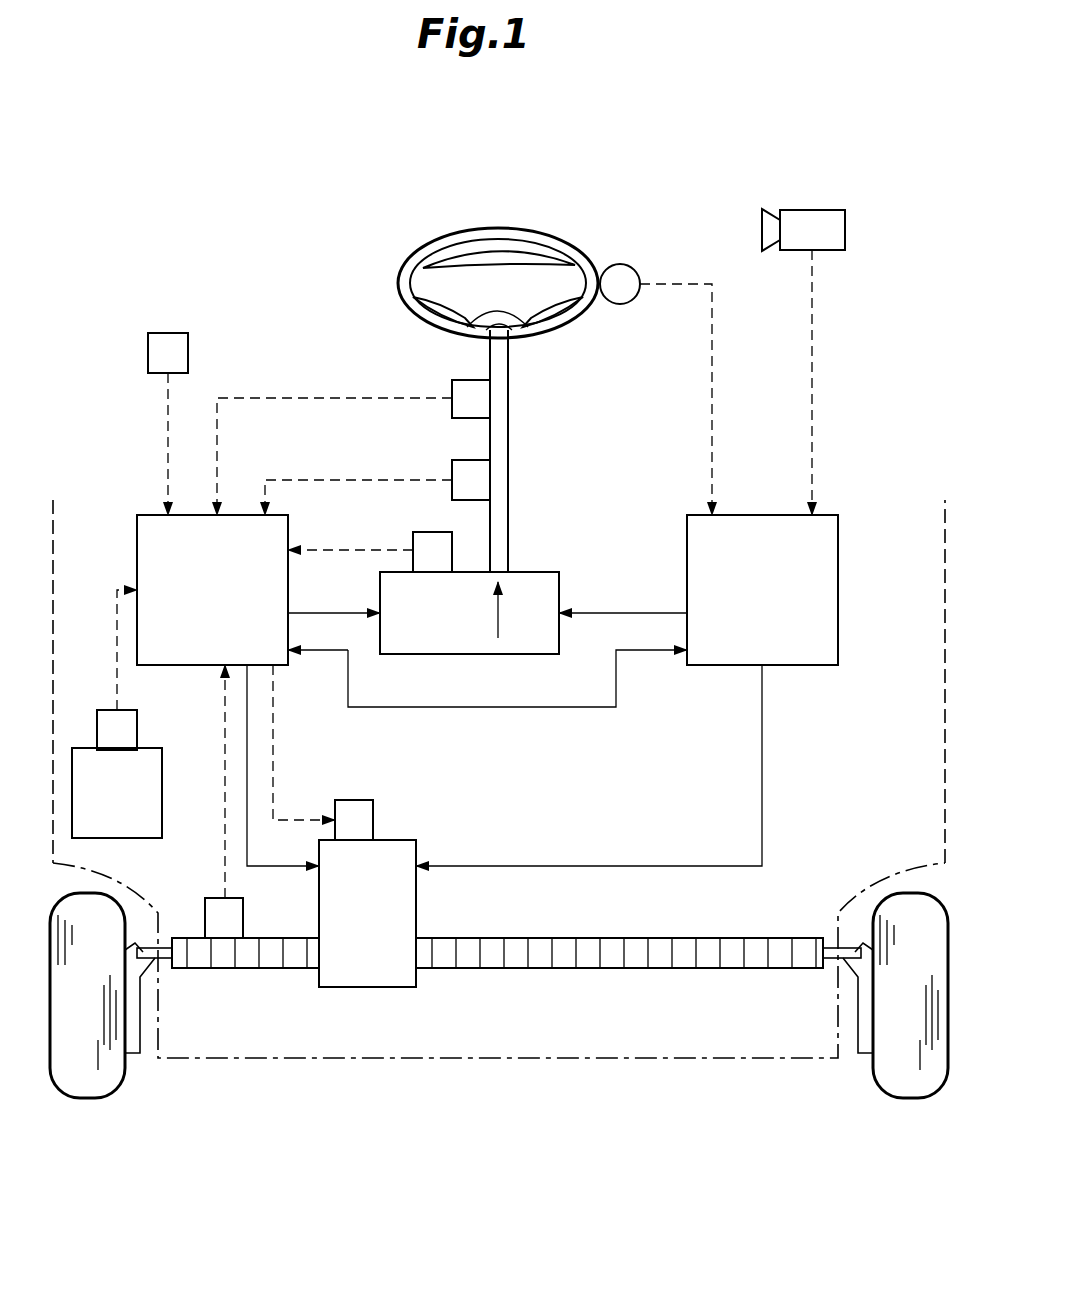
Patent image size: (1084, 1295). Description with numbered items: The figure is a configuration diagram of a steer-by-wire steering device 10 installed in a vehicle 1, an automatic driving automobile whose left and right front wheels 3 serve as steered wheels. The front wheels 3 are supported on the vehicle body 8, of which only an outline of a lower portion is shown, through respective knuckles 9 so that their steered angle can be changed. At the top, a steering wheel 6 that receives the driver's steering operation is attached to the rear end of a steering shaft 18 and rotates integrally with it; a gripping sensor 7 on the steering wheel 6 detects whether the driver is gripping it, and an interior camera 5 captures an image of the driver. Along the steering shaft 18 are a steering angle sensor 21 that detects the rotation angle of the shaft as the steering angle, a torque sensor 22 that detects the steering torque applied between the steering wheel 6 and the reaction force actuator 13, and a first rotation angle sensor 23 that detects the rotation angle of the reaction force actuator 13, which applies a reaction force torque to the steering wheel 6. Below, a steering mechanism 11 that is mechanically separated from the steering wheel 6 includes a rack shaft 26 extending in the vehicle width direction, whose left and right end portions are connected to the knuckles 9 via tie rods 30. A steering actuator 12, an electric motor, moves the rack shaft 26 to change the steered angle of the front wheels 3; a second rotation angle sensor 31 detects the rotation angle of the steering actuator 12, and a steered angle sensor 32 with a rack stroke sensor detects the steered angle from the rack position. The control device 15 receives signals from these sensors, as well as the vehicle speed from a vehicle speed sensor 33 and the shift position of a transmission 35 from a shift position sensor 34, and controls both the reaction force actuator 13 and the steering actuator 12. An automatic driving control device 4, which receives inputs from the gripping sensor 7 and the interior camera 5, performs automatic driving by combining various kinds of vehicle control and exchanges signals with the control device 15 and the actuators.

The vehicle 1 is at (193, 157).
The front wheels 3 is at (85, 1098).
The automatic driving control device 4 is at (762, 515).
The interior camera 5 is at (812, 210).
The steering wheel 6 is at (590, 322).
The gripping sensor 7 is at (632, 267).
The vehicle body 8 is at (720, 1060).
The knuckles 9 is at (130, 1055).
The steering device 10 is at (572, 202).
The steering mechanism 11 is at (287, 978).
The steering actuator 12 is at (345, 988).
The reaction force actuator 13 is at (542, 572).
The control device 15 is at (150, 515).
The steering shaft 18 is at (498, 425).
The steering angle sensor 21 is at (463, 380).
The torque sensor 22 is at (473, 460).
The first rotation angle sensor 23 is at (433, 532).
The rack shaft 26 is at (640, 968).
The tie rods 30 is at (167, 957).
The second rotation angle sensor 31 is at (373, 820).
The steered angle sensor 32 is at (205, 915).
The vehicle speed sensor 33 is at (178, 333).
The shift position sensor 34 is at (97, 732).
The transmission 35 is at (162, 815).